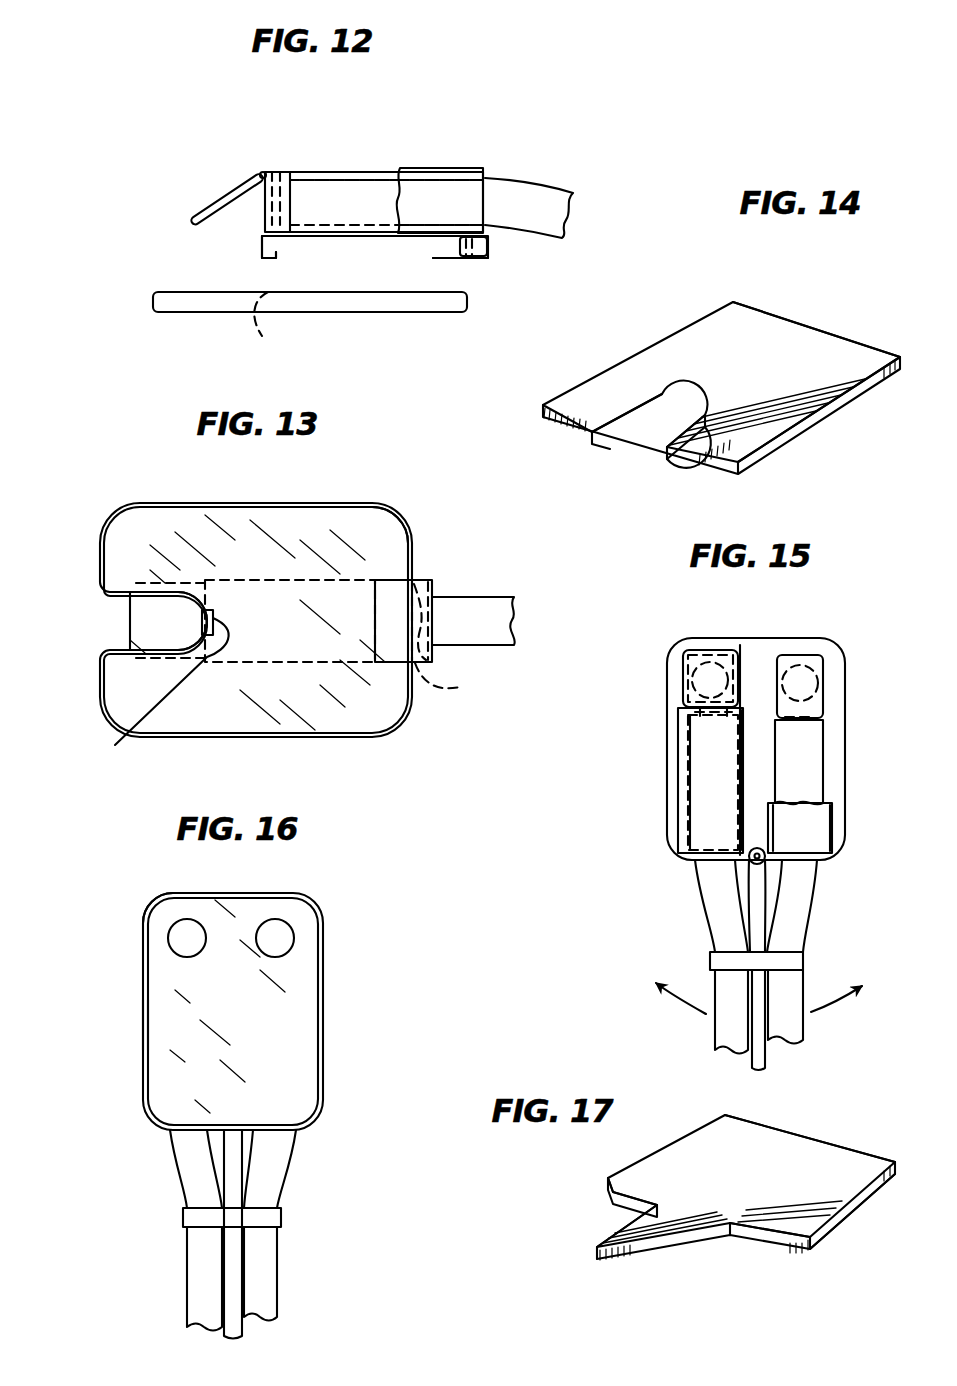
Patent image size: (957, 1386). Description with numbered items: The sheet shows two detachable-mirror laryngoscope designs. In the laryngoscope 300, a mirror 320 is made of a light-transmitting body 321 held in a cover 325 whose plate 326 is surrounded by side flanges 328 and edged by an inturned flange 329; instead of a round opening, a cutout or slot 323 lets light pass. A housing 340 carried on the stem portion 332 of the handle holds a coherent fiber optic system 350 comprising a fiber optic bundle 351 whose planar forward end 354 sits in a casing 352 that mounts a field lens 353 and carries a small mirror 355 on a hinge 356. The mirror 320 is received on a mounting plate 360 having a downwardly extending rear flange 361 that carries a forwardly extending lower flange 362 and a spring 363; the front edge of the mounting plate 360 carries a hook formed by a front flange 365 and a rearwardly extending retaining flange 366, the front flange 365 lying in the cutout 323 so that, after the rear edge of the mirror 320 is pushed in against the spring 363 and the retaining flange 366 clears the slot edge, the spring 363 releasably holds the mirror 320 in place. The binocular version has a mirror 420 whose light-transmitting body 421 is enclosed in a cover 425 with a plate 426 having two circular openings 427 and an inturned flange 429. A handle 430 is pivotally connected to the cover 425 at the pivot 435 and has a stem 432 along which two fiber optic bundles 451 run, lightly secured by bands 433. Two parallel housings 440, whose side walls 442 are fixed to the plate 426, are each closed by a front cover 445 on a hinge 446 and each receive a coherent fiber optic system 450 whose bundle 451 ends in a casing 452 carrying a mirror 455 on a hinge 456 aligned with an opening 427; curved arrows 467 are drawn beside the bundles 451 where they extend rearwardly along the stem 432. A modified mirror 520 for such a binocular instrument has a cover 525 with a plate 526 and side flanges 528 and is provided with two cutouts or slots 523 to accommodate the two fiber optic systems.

In FIG. 12, the laryngoscope 300 is at (97, 114).
In FIG. 12, the mirror 320 is at (232, 311).
In FIG. 14, the mirror 320 is at (650, 332).
In FIG. 13, the mirror 320 is at (117, 512).
In FIG. 13, the light-transmitting body 321 is at (355, 528).
In FIG. 12, the cutout or slot 323 is at (262, 336).
In FIG. 14, the cutout or slot 323 is at (660, 428).
In FIG. 13, the cutout or slot 323 is at (125, 598).
In FIG. 14, the cover 325 is at (722, 345).
In FIG. 14, the plate 326 is at (778, 369).
In FIG. 12, the side flanges 328 is at (380, 302).
In FIG. 14, the side flanges 328 is at (818, 427).
In FIG. 13, the inturned flange 329 is at (185, 503).
In FIG. 12, the stem portion 332 is at (548, 190).
In FIG. 13, the stem portion 332 is at (490, 598).
In FIG. 12, the housing 340 is at (430, 166).
In FIG. 12, the coherent fiber optic system 350 is at (318, 165).
In FIG. 12, the fiber optic bundle 351 is at (355, 178).
In FIG. 12, the casing 352 is at (293, 172).
In FIG. 12, the field lens 353 is at (270, 170).
In FIG. 13, the field lens 353 is at (255, 580).
In FIG. 12, the forward end of fiber optic bundle 354 is at (280, 170).
In FIG. 12, the mirror 355 is at (220, 200).
In FIG. 13, the mirror 355 is at (140, 625).
In FIG. 12, the hinge 356 is at (260, 174).
In FIG. 12, the mounting plate 360 is at (346, 240).
In FIG. 12, the rear flange 361 is at (490, 247).
In FIG. 13, the rear flange 361 is at (432, 590).
In FIG. 12, the lower flange 362 is at (448, 260).
In FIG. 13, the lower flange 362 is at (405, 578).
In FIG. 12, the spring 363 is at (478, 258).
In FIG. 13, the spring 363 is at (459, 680).
In FIG. 12, the front flange 365 is at (262, 245).
In FIG. 12, the retaining flange 366 is at (277, 257).
In FIG. 13, the retaining flange 366 is at (156, 694).
In FIG. 15, the mirror 420 is at (698, 640).
In FIG. 16, the mirror 420 is at (326, 1029).
In FIG. 16, the light-transmitting body 421 is at (290, 1008).
In FIG. 16, the cover 425 is at (140, 1033).
In FIG. 15, the plate 426 is at (785, 650).
In FIG. 15, the circular openings 427 is at (738, 655).
In FIG. 16, the circular openings 427 is at (288, 926).
In FIG. 16, the inturned flange 429 is at (160, 901).
In FIG. 15, the handle 430 is at (752, 885).
In FIG. 15, the stem 432 is at (766, 1062).
In FIG. 16, the stem 432 is at (233, 1262).
In FIG. 15, the bands 433 is at (803, 960).
In FIG. 16, the bands 433 is at (183, 1218).
In FIG. 15, the pivotal connection 435 is at (750, 860).
In FIG. 15, the housings 440 is at (708, 800).
In FIG. 15, the pocket wall 442 is at (679, 792).
In FIG. 15, the front cover 445 is at (683, 666).
In FIG. 15, the hinge 446 is at (688, 708).
In FIG. 15, the coherent fiber optic system 450 is at (802, 771).
In FIG. 15, the fiber optic bundle 451 is at (790, 992).
In FIG. 16, the fiber optic bundle 451 is at (182, 1170).
In FIG. 15, the casing 452 is at (824, 742).
In FIG. 15, the mirror 455 is at (824, 702).
In FIG. 15, the hinge 456 is at (812, 718).
In FIG. 15, the direction of movement 467 is at (830, 1015).
In FIG. 17, the laryngoscope mirror 520 is at (812, 1124).
In FIG. 17, the cutouts or slots 523 is at (622, 1212).
In FIG. 17, the cover 525 is at (727, 1150).
In FIG. 17, the plate 526 is at (790, 1193).
In FIG. 17, the side flanges 528 is at (852, 1222).